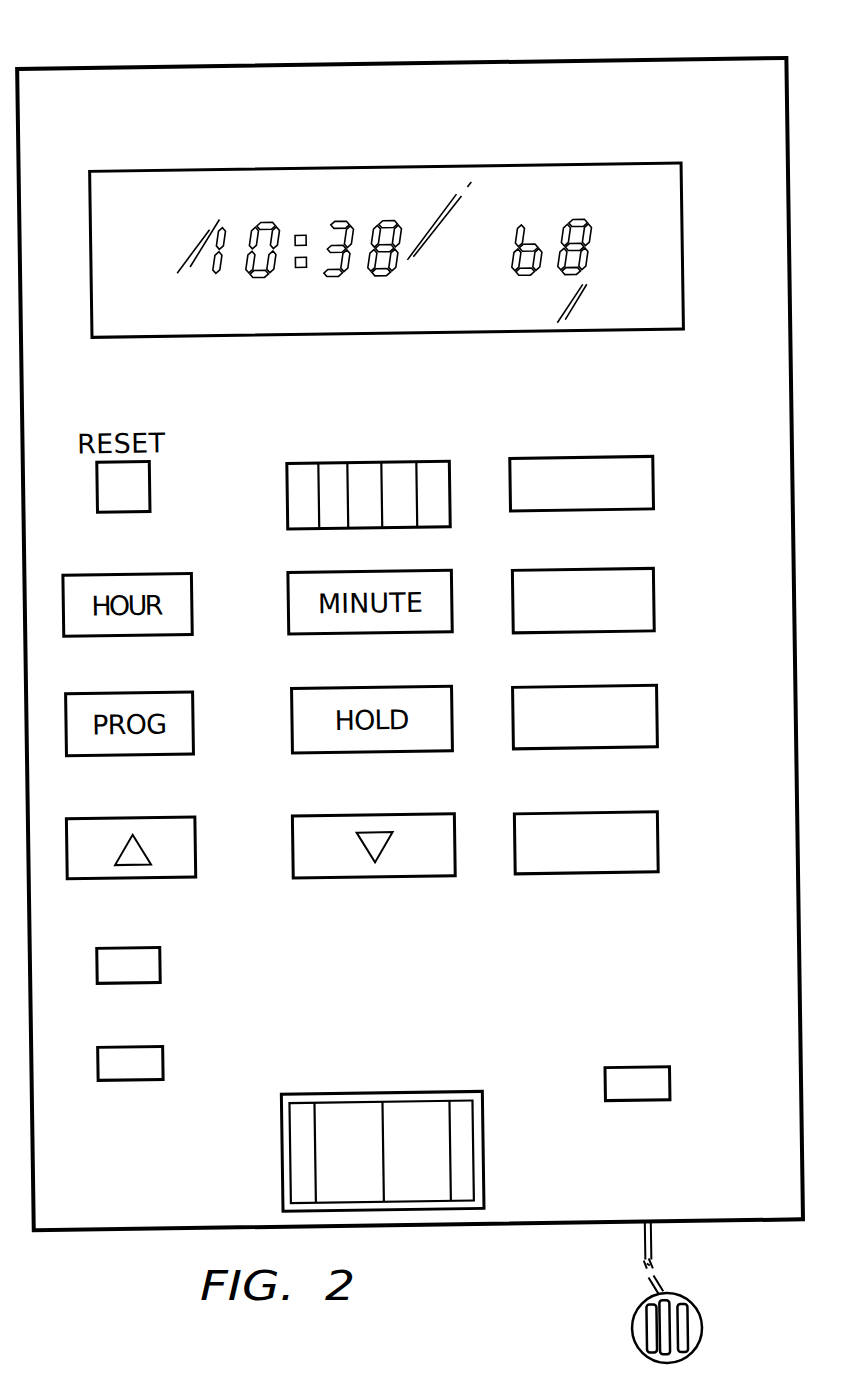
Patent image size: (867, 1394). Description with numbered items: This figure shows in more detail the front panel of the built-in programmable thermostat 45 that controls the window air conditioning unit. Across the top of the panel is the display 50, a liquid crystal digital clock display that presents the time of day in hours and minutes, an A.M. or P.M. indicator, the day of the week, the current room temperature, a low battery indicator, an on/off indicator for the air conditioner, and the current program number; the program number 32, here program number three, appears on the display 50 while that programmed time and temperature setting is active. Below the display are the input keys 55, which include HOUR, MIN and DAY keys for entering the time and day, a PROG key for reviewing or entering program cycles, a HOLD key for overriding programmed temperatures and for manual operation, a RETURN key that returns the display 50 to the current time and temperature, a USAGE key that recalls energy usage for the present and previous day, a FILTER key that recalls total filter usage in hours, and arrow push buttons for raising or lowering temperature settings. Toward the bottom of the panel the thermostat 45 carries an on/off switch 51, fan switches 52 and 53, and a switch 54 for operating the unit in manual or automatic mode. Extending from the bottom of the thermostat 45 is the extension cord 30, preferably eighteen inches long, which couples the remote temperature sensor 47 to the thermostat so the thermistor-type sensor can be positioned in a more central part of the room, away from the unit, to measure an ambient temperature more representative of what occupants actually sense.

The built-in programmable thermostat 45 is at (105, 64).
The display 50 is at (378, 167).
The program number 32 is at (524, 333).
The input keys 55 is at (656, 500).
The on/off switch 51 is at (104, 944).
The fan switch 52 is at (129, 1077).
The fan switch 53 is at (628, 1104).
The manual/automatic switch 54 is at (437, 1092).
The extension cord 30 is at (646, 1262).
The remote temperature sensor 47 is at (678, 1361).